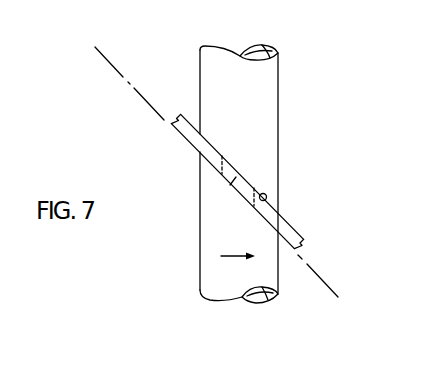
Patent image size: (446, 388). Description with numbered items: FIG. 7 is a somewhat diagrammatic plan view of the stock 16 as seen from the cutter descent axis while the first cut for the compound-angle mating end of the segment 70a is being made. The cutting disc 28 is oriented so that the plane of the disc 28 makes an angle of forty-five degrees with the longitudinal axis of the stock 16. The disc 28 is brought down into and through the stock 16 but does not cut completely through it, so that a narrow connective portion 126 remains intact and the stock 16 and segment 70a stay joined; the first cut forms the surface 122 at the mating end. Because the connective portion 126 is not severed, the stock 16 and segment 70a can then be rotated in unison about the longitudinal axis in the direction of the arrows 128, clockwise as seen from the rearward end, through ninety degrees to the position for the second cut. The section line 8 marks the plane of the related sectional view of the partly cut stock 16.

The section line 8- 8 is at (107, 59).
The stock 16 is at (201, 232).
The segment 70a is at (273, 103).
The cutting disc 28 is at (181, 135).
The connective portion 126 is at (232, 183).
The surface 122 is at (267, 195).
The arrows 128 is at (221, 257).